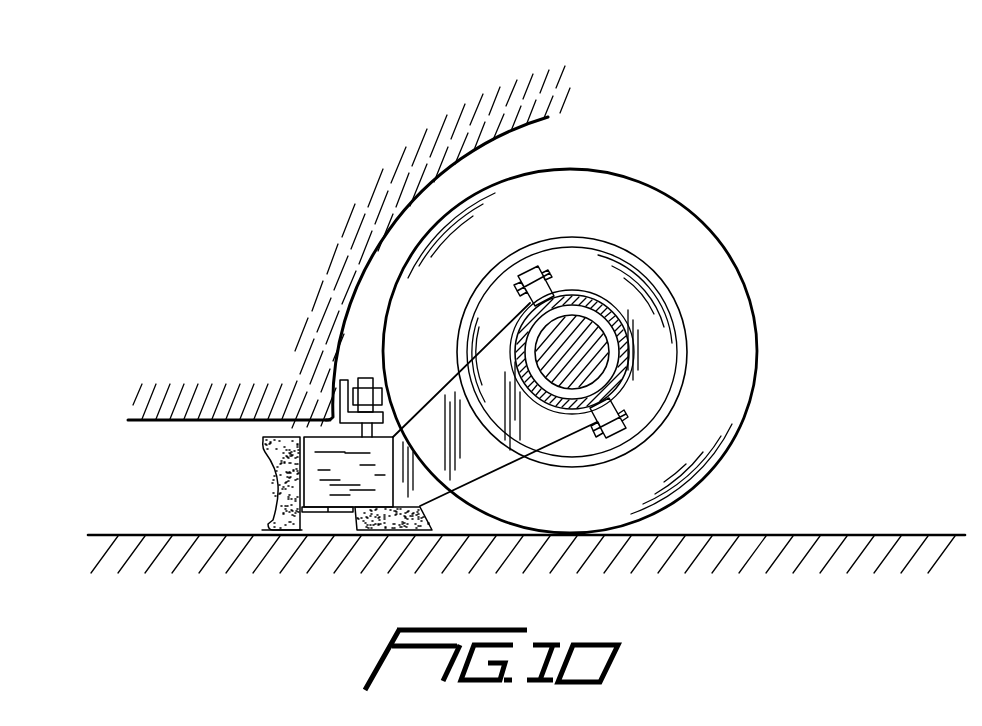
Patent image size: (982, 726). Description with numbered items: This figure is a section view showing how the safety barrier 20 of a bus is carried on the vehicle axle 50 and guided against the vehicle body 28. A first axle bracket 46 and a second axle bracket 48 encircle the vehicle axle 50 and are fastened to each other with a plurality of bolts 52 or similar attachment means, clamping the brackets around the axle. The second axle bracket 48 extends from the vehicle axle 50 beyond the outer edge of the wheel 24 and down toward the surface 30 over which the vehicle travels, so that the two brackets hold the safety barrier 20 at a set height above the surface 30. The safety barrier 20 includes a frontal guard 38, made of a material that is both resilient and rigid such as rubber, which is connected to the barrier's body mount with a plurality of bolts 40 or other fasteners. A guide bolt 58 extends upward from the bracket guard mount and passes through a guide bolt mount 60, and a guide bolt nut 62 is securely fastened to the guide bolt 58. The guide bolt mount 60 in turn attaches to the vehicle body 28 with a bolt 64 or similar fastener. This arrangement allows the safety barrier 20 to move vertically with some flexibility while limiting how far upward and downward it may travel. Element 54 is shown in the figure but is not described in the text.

The safety barrier 20 is at (271, 517).
The wheel 24 is at (718, 263).
The vehicle body 28 is at (530, 93).
The surface 30 is at (167, 535).
The frontal guard 38 is at (288, 478).
The bolts 40 is at (265, 446).
The first axle bracket 46 is at (640, 348).
The second axle bracket 48 is at (548, 430).
The vehicle axle 50 is at (588, 325).
The bolts 52 is at (557, 267).
The foot plate 54 is at (365, 495).
The guide bolt 58 is at (342, 386).
The guide bolt mount 60 is at (323, 418).
The guide bolt nut 62 is at (348, 403).
The bolt 64 is at (382, 408).